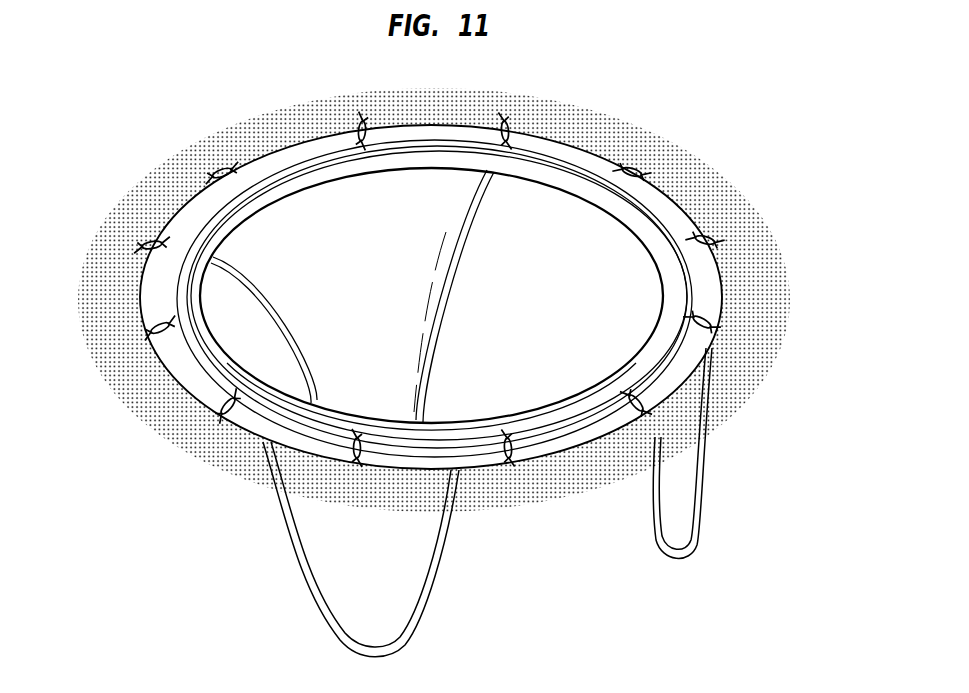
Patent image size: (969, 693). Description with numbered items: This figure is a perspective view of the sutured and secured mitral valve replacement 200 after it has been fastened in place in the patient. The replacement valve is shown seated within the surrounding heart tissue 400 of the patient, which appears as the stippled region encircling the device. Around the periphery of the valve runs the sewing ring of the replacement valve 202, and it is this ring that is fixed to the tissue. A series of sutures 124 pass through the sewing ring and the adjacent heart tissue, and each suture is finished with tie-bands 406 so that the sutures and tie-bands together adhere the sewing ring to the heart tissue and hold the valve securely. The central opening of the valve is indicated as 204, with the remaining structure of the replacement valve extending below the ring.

The mitral valve replacement 200 is at (491, 370).
The sewing ring of the replacement valve 202 is at (283, 157).
The valve orifice with leaflets 204 is at (387, 345).
The heart tissue 400 is at (149, 193).
The tie-bands 406 is at (714, 242).
The sutures 124 is at (730, 255).